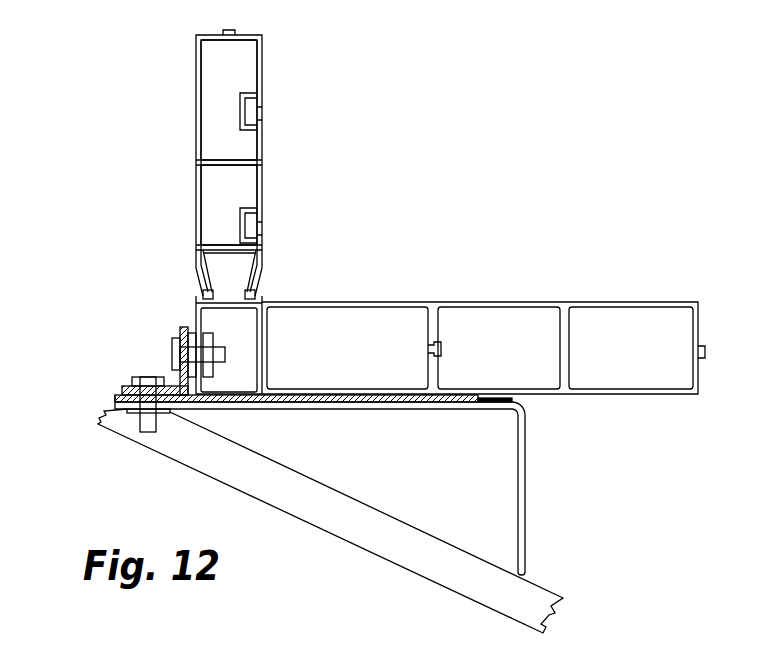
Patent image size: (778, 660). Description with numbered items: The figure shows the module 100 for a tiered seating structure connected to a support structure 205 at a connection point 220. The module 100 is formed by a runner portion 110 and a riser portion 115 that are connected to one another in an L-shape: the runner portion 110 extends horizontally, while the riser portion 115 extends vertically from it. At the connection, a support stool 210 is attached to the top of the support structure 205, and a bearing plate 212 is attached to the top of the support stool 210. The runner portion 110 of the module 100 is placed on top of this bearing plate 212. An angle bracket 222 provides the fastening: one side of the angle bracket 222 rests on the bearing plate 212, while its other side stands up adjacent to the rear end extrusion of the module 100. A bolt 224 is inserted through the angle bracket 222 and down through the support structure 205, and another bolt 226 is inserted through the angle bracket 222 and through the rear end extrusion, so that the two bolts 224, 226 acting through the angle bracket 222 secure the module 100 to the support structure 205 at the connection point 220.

The module 100 is at (484, 127).
The runner portion 110 is at (533, 297).
The riser portion 115 is at (192, 130).
The support structure 205 is at (461, 580).
The support stool 210 is at (527, 478).
The bearing plate 212 is at (506, 402).
The connection point 220 is at (128, 337).
The angle bracket 222 is at (120, 391).
The bolt 224 is at (137, 378).
The bolt 226 is at (172, 340).